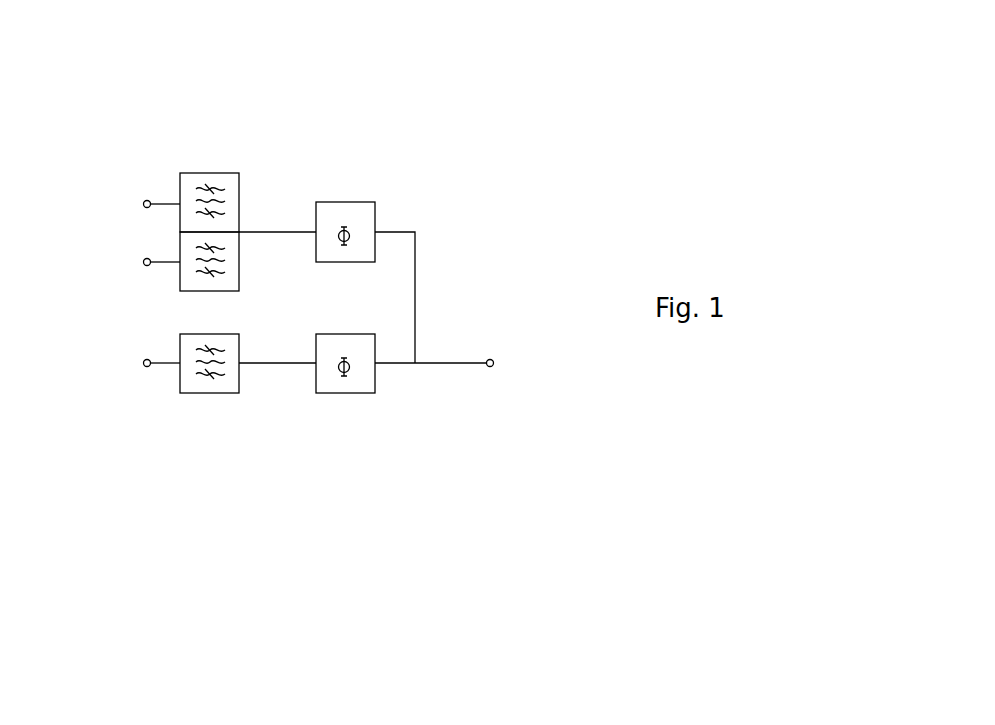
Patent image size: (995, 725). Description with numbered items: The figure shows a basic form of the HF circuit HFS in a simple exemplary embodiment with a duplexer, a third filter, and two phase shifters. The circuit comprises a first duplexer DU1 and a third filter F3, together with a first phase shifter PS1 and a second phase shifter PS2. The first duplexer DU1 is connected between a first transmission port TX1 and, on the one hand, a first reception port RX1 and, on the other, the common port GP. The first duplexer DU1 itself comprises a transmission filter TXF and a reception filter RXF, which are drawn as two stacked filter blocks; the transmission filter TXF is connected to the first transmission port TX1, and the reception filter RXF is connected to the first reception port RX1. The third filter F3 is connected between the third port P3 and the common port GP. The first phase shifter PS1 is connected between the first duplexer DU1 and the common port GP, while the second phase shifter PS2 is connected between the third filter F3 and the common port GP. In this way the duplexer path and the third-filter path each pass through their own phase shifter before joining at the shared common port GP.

The HF circuit HFS is at (570, 70).
The first duplexer DU1 is at (278, 152).
The transmission filter TXF is at (199, 173).
The reception filter RXF is at (239, 242).
The third filter F3 is at (193, 393).
The first phase shifter PS1 is at (338, 202).
The second phase shifter PS2 is at (342, 393).
The first transmission port TX1 is at (144, 204).
The first reception port RX1 is at (144, 262).
The third port P3 is at (144, 363).
The common port GP is at (497, 366).